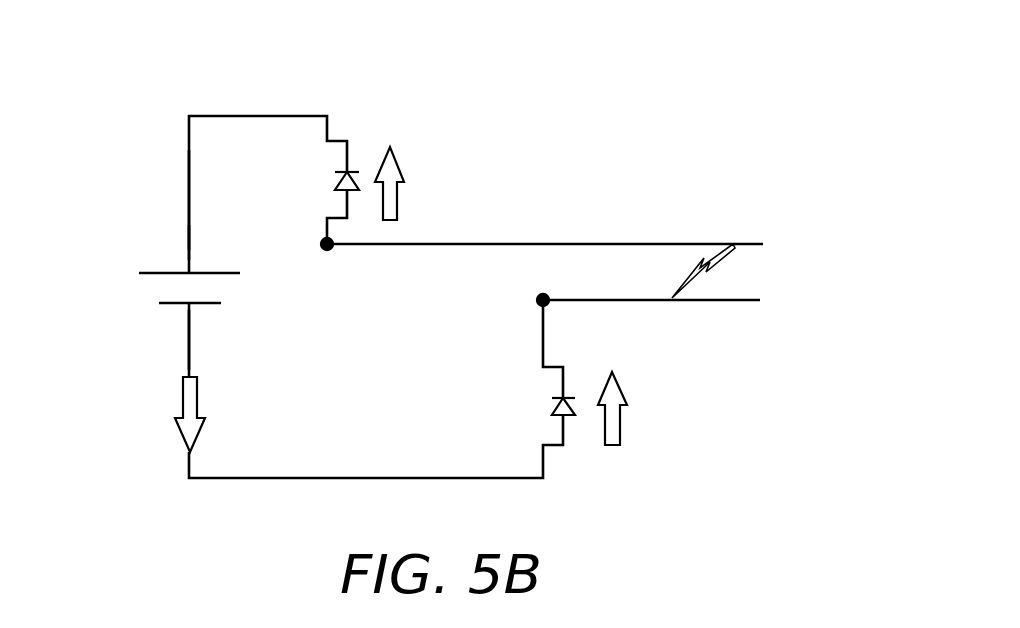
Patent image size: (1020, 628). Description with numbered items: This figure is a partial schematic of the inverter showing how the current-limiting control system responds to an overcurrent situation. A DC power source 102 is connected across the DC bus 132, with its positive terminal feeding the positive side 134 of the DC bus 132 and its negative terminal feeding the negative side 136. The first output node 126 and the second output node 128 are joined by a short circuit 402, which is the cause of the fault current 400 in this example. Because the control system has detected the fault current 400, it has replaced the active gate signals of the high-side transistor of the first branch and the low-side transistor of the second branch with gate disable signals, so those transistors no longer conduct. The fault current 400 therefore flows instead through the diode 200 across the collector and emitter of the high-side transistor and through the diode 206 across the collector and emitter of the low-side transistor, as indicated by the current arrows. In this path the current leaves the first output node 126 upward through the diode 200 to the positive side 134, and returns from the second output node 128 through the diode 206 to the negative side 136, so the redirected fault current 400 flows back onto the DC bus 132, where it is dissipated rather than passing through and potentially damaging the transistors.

The DC power source 102 is at (152, 273).
The first output node 126 is at (334, 249).
The second output node 128 is at (539, 297).
The DC bus 132 is at (189, 200).
The positive side 134 is at (178, 232).
The negative side 136 is at (180, 338).
The diode 200 is at (337, 170).
The diode 206 is at (558, 400).
The fault current 400 is at (180, 430).
The short circuit 402 is at (723, 245).